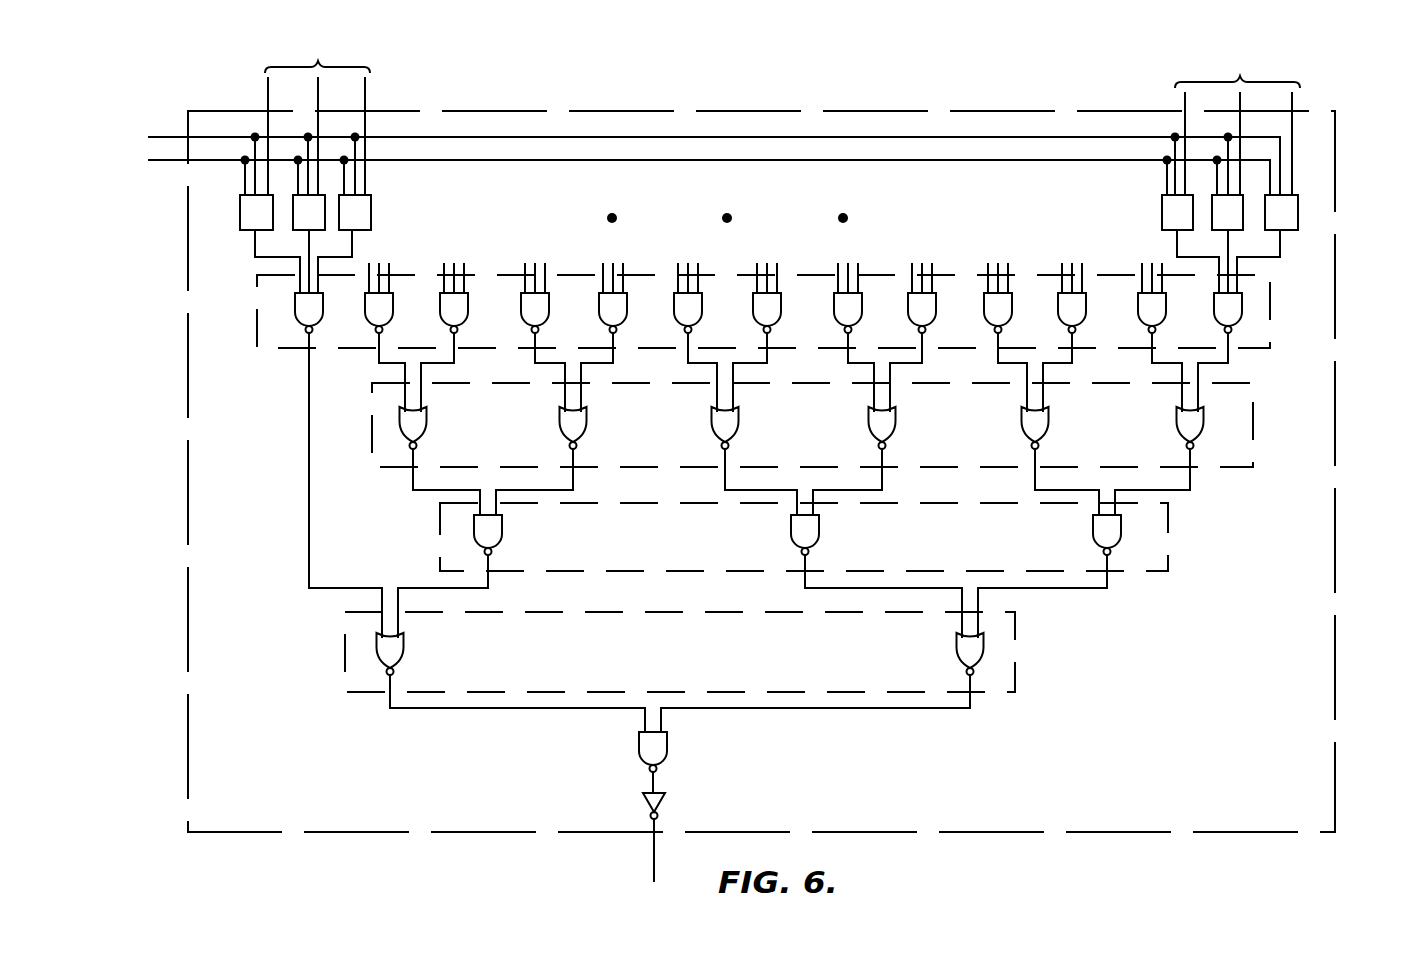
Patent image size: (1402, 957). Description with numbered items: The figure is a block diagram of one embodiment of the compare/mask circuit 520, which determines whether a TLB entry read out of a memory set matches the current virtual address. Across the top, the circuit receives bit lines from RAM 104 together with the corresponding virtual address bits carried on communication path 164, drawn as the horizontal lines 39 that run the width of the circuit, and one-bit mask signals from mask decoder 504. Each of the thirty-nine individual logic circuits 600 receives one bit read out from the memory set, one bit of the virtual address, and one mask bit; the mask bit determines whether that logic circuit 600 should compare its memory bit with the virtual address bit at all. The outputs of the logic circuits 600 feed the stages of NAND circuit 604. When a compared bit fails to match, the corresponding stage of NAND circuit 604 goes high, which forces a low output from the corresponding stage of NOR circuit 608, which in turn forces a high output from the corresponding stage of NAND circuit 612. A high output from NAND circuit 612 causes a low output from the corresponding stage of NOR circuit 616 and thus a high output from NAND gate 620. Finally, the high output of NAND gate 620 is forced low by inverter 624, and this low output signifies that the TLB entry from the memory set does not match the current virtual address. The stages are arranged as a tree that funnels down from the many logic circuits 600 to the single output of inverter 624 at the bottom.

The compare/mask circuit 520 is at (1338, 704).
The RAM 104 is at (787, 114).
The mask decoder 504 is at (118, 175).
The communication path 164 is at (148, 134).
The mask lines 39 is at (156, 137).
The logic circuits 600 is at (241, 197).
The NAND circuit 604 is at (1275, 290).
The NOR circuit 608 is at (1262, 411).
The NAND circuit 612 is at (1174, 537).
The NOR circuit 616 is at (1023, 654).
The NAND gate 620 is at (668, 752).
The inverter 624 is at (660, 806).